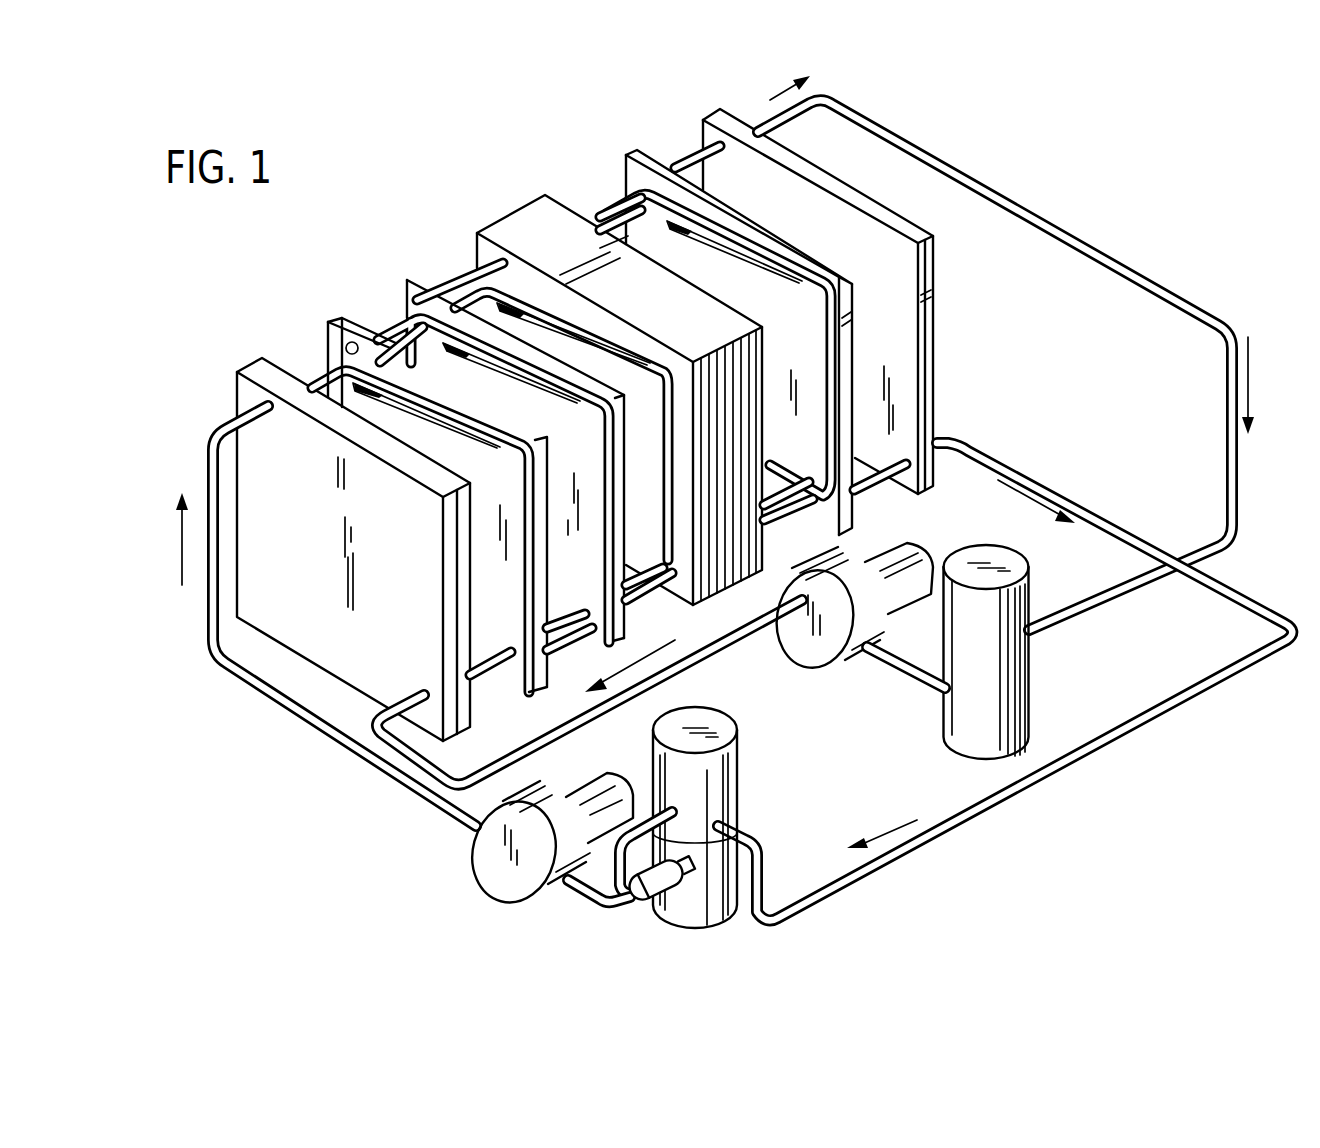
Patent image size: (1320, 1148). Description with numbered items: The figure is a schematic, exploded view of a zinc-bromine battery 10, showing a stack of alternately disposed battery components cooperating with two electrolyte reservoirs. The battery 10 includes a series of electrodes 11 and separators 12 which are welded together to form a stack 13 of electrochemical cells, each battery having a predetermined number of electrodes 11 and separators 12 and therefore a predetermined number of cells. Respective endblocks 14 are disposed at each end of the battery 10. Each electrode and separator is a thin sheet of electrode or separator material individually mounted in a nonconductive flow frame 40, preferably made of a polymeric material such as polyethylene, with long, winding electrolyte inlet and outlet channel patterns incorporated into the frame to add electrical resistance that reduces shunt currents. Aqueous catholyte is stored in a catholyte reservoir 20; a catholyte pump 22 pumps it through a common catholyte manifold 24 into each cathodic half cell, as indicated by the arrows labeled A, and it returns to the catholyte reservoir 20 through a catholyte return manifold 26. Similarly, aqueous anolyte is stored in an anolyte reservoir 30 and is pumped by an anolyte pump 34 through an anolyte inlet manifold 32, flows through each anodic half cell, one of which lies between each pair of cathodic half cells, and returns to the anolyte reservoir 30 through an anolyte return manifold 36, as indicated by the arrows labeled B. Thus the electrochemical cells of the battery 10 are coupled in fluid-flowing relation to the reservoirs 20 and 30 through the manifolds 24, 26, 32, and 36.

The zinc-bromine battery 10 is at (380, 192).
The electrodes 11 is at (407, 280).
The separators 12 is at (330, 320).
The stack 13 is at (493, 198).
The endblocks 14 is at (703, 118).
The catholyte reservoir 20 is at (740, 773).
The catholyte pump 22 is at (498, 866).
The common catholyte manifold 24 is at (367, 756).
The catholyte return manifold 26 is at (1212, 686).
The anolyte reservoir 30 is at (1015, 663).
The anolyte inlet manifold 32 is at (676, 665).
The anolyte pump 34 is at (828, 655).
The anolyte return manifold 36 is at (1085, 237).
The nonconductive flow frame 40 is at (765, 238).